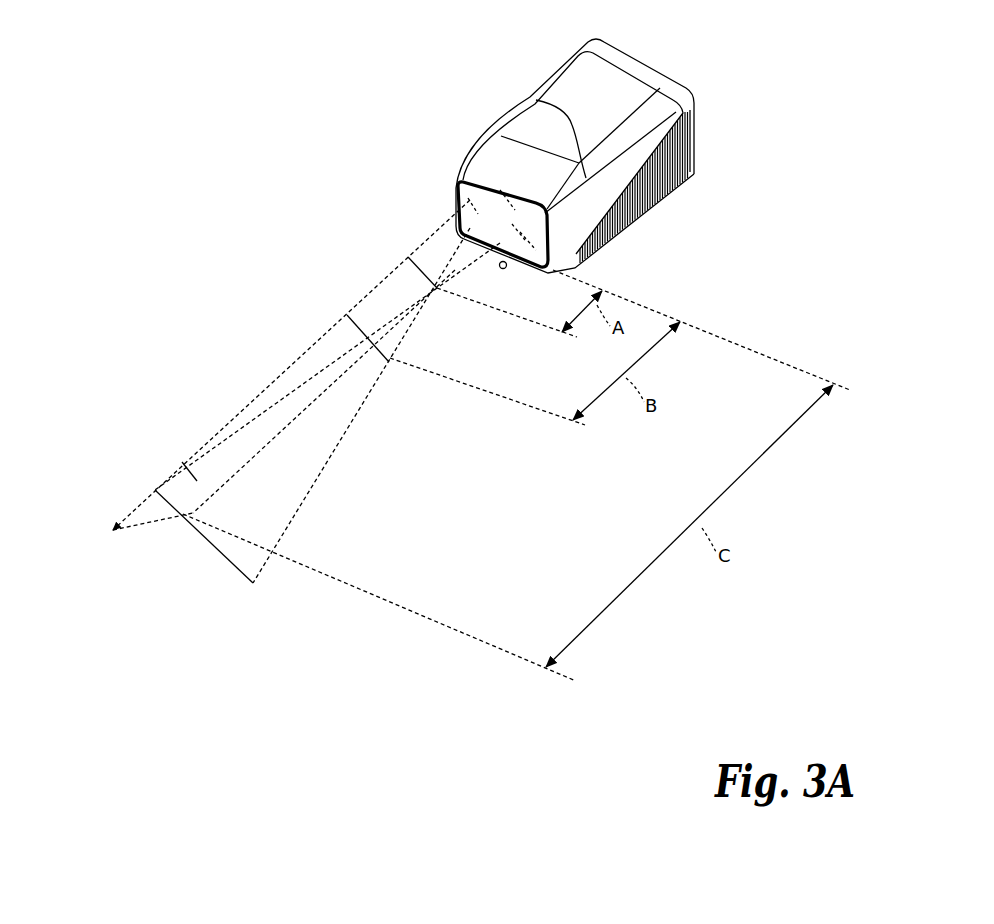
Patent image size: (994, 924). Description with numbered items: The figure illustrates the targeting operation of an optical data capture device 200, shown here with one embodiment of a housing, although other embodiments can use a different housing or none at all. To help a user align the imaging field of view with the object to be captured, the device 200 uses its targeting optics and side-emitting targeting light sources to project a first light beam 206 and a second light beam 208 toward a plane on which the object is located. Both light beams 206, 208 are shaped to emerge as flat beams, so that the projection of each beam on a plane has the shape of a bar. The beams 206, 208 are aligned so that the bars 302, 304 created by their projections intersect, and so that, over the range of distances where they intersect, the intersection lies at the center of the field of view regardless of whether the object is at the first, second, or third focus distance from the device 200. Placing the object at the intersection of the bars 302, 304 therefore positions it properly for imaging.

The optical data capture device 200 is at (660, 46).
The bar 302 is at (455, 278).
The bar 304 is at (411, 257).
The first light beam 206 is at (181, 463).
The second light beam 208 is at (315, 452).